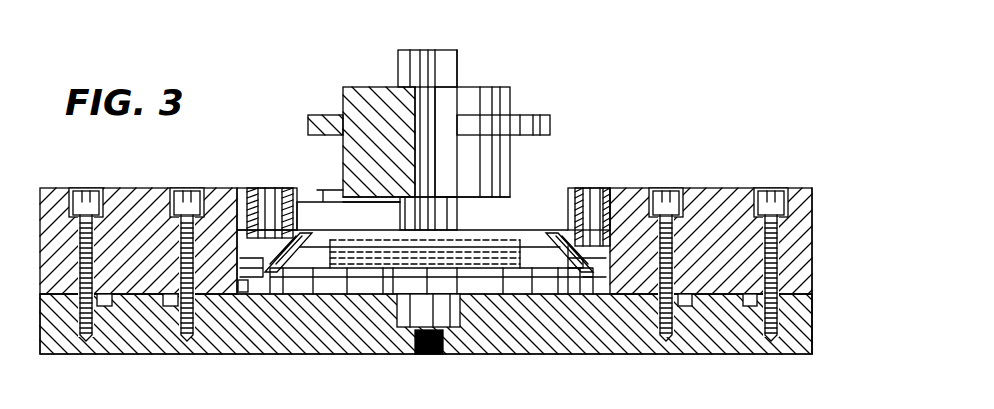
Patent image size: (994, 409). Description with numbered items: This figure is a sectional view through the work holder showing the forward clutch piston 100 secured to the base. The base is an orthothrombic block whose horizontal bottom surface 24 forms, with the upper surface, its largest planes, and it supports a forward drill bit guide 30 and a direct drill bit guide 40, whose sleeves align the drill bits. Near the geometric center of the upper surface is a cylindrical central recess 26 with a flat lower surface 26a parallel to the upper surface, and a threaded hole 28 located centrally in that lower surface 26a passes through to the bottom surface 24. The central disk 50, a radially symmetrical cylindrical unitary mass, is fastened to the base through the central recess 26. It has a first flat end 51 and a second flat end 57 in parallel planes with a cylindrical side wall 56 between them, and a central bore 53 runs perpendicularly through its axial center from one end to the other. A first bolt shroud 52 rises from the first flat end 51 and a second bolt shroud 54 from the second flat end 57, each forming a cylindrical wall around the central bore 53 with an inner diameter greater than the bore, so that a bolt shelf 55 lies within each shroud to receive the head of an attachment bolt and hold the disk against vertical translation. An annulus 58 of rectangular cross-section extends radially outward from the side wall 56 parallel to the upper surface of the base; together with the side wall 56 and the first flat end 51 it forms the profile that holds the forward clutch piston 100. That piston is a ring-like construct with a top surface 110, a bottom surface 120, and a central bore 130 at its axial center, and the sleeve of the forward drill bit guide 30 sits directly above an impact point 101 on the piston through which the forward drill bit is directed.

The bottom surface 24 is at (754, 356).
The central recess 26 is at (393, 305).
The lower surface 26a is at (420, 352).
The threaded hole 28 is at (436, 320).
The forward drill bit guide 30 is at (815, 228).
The direct drill bit guide 40 is at (40, 226).
The central disk 50 is at (330, 76).
The first flat end 51 is at (326, 195).
The first bolt shroud 52 is at (545, 226).
The central bore 53 is at (385, 90).
The second bolt shroud 54 is at (457, 50).
The bolt shelf 55 is at (343, 116).
The cylindrical side wall 56 is at (512, 97).
The second flat end 57 is at (485, 87).
The annulus 58 is at (550, 118).
The forward clutch piston 100 is at (447, 221).
The impact point 101 is at (658, 200).
The top surface 110 is at (338, 212).
The bottom surface 120 is at (243, 292).
The central bore 130 is at (498, 282).